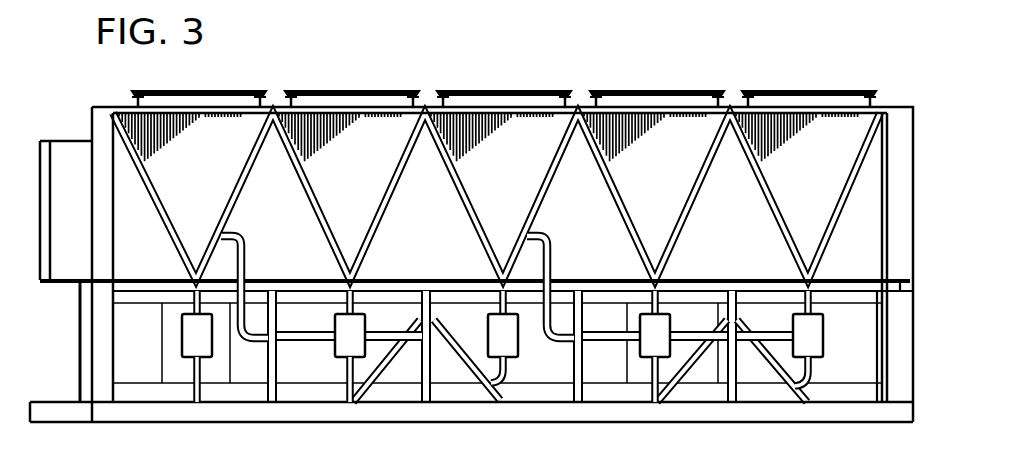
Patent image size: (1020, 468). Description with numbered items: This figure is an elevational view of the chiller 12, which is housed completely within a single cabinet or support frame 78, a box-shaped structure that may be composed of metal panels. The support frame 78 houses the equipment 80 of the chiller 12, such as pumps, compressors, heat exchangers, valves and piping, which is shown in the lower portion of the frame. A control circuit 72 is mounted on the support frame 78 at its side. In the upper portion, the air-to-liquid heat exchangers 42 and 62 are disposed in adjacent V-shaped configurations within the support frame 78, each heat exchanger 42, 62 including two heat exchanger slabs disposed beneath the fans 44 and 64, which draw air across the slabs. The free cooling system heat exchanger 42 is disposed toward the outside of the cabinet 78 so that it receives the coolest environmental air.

The chiller 12 is at (430, 42).
The air-to-liquid heat exchanger 42 is at (827, 234).
The fan 44 is at (786, 90).
The air-to-liquid heat exchanger 62 is at (676, 233).
The fan 64 is at (633, 90).
The control circuit 72 is at (70, 152).
The support frame 78 is at (70, 402).
The equipment 80 is at (192, 336).